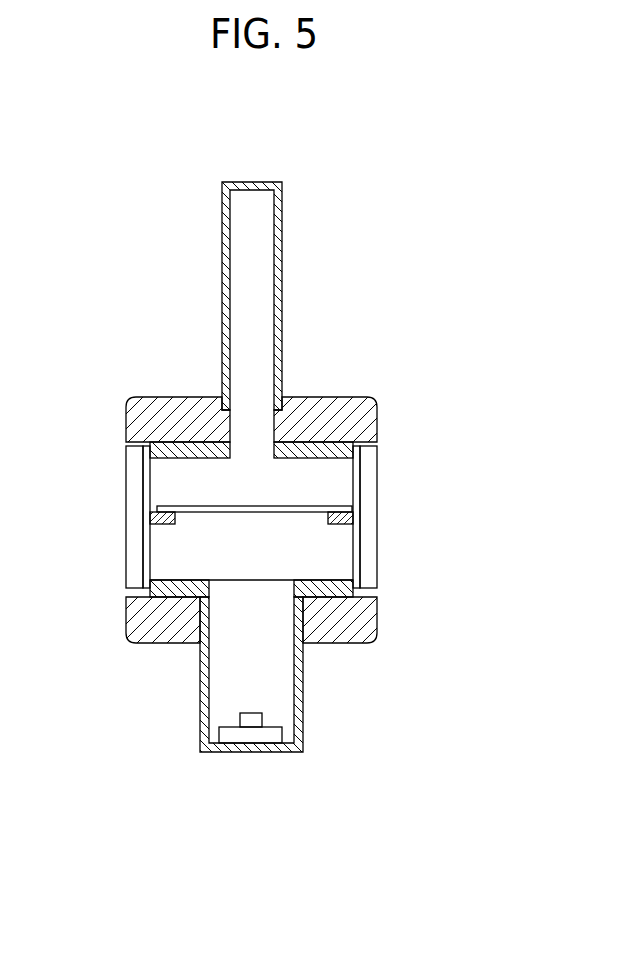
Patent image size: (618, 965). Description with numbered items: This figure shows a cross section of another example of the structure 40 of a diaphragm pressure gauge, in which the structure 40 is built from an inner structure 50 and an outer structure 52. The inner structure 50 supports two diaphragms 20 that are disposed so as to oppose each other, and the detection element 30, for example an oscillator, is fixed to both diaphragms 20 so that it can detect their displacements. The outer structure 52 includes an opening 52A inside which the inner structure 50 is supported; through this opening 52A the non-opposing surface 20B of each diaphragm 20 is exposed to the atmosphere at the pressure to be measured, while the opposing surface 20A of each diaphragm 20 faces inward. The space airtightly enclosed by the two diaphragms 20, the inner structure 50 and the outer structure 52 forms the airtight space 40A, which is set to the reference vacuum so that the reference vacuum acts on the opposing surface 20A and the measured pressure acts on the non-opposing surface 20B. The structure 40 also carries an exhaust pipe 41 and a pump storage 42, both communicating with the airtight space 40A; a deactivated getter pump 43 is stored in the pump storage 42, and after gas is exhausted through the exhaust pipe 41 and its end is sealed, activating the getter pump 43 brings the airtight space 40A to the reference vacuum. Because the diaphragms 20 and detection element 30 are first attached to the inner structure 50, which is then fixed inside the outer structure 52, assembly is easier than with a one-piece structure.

The structure 40 is at (251, 467).
The exhaust pipe 41 is at (284, 281).
The pump storage 42 is at (304, 690).
The getter pump 43 is at (274, 738).
The outer structure 52 is at (176, 405).
The opening 52A is at (126, 462).
The inner structure 50 is at (178, 598).
The diaphragm 20 is at (247, 517).
The opposing surface 20A is at (153, 496).
The non-opposing surface 20B is at (143, 560).
The detection element 30 is at (254, 514).
The airtight space 40A is at (306, 549).